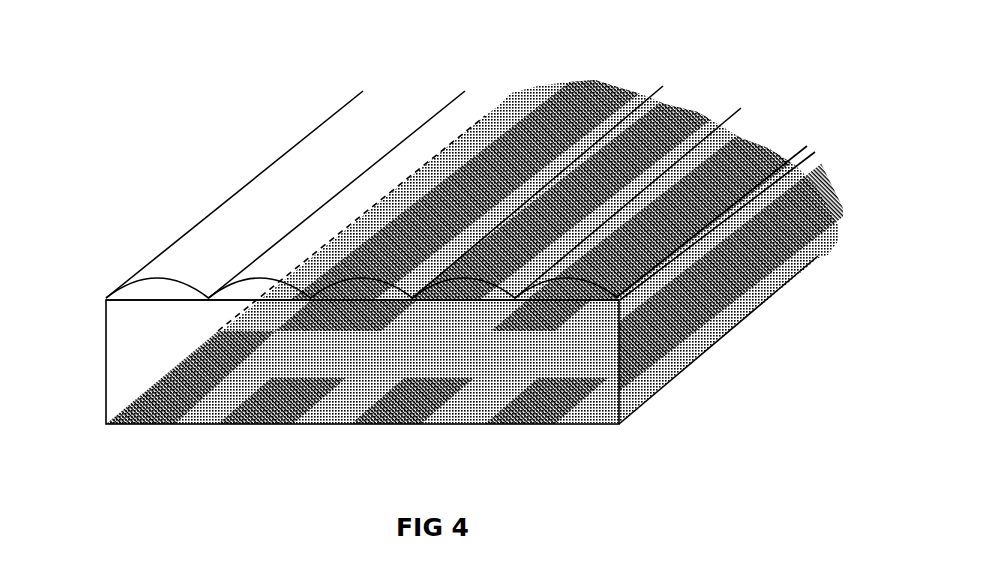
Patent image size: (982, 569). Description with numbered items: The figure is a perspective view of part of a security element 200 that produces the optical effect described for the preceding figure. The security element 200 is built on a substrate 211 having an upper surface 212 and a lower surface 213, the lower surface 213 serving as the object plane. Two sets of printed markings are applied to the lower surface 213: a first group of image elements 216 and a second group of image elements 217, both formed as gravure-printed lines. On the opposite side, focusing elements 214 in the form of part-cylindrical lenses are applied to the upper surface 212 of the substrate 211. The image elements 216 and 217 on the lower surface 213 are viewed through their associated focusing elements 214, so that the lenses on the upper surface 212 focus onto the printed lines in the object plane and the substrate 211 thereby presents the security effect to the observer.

The security element 200 is at (212, 124).
The substrate 211 is at (612, 345).
The upper surface 212 is at (130, 294).
The lower surface (object plane) 213 is at (625, 388).
The focusing elements 214 is at (250, 268).
The first group of image elements 216 is at (125, 418).
The second group of image elements 217 is at (545, 107).